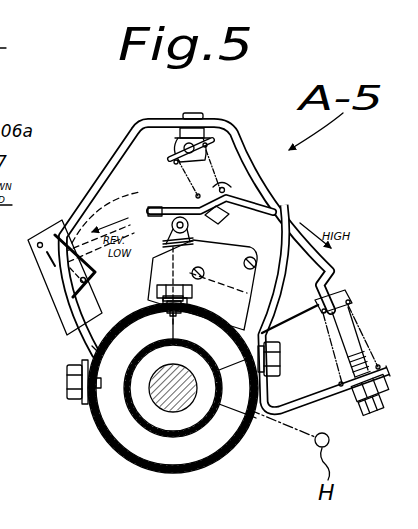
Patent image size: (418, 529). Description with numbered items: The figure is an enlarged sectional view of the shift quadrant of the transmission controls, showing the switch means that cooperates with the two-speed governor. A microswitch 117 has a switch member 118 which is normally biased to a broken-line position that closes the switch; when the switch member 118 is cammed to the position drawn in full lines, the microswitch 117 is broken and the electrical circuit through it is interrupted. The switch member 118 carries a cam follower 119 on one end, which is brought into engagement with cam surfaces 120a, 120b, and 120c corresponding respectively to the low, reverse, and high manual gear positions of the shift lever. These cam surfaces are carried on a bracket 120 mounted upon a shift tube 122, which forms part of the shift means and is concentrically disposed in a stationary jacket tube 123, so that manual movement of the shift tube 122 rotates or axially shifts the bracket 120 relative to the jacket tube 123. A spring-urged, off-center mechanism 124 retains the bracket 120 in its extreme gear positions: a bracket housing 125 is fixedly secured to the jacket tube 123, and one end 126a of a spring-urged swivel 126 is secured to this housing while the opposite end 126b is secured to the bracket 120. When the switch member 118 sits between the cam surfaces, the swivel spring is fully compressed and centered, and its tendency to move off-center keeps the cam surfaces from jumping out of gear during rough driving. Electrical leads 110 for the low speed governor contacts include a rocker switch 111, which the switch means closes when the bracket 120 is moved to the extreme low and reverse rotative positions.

The electrical leads 110 is at (26, 258).
The rocker switch 111 is at (47, 277).
The microswitch 117 is at (240, 244).
The switch member 118 is at (148, 246).
The cam follower 119 is at (193, 229).
The bracket 120 is at (338, 265).
The cam surface 120a is at (323, 315).
The cam surface 120b is at (152, 206).
The cam surface 120c is at (106, 163).
The shift tube 122 is at (188, 432).
The stationary jacket tube 123 is at (104, 440).
The spring-urged off-center mechanism 124 is at (193, 116).
The bracket housing 125 is at (147, 121).
The spring-urged swivel 126 is at (218, 156).
The swivel end 126a is at (182, 145).
The swivel end 126b is at (250, 197).